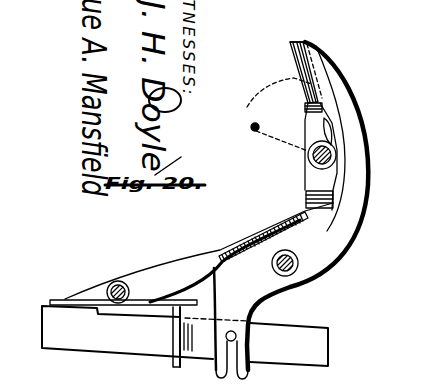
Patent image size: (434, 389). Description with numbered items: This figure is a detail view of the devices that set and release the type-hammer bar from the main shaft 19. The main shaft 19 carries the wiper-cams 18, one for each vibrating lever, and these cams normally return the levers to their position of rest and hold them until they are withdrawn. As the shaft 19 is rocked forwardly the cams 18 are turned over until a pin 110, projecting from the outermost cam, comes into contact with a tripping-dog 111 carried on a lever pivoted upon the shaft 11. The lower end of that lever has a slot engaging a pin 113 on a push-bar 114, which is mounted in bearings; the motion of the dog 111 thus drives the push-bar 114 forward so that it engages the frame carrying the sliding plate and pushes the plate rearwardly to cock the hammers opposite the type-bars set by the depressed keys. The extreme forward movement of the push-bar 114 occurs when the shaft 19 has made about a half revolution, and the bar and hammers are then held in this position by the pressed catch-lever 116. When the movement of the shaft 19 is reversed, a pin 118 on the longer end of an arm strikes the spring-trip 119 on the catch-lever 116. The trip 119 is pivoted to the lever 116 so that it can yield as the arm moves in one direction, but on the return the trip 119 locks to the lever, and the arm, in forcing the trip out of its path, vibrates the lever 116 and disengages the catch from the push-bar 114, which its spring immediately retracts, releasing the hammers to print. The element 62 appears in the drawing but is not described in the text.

The tripping-dog 111 is at (290, 54).
The cams 18 is at (272, 90).
The pin 110 is at (250, 126).
The pin 118 is at (322, 96).
The main shaft 19 is at (337, 151).
The stop block 62 is at (334, 192).
The spring-trip 119 is at (308, 203).
The catch-lever 116 is at (178, 267).
The shaft 11 is at (298, 272).
The pin 113 is at (236, 333).
The push-bar 114 is at (289, 344).